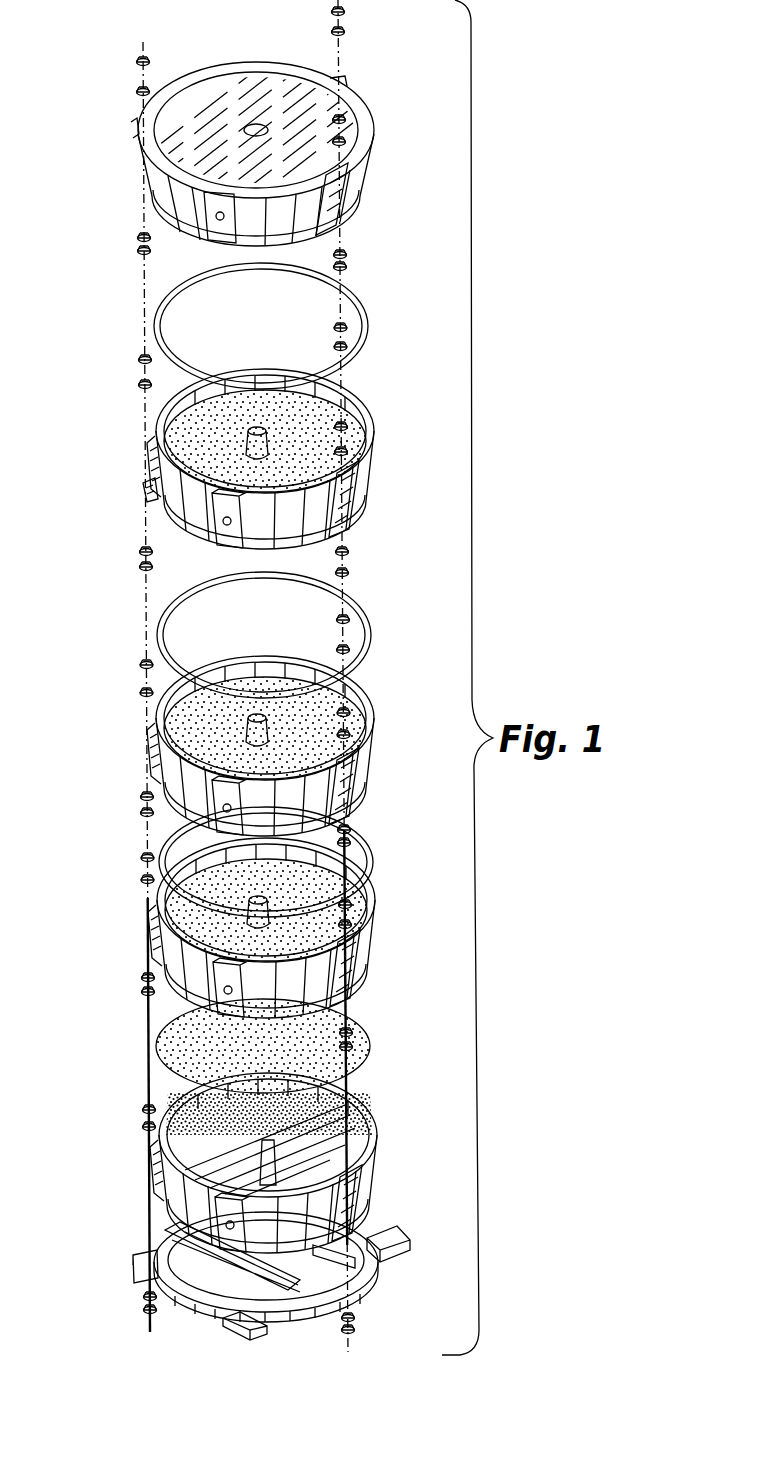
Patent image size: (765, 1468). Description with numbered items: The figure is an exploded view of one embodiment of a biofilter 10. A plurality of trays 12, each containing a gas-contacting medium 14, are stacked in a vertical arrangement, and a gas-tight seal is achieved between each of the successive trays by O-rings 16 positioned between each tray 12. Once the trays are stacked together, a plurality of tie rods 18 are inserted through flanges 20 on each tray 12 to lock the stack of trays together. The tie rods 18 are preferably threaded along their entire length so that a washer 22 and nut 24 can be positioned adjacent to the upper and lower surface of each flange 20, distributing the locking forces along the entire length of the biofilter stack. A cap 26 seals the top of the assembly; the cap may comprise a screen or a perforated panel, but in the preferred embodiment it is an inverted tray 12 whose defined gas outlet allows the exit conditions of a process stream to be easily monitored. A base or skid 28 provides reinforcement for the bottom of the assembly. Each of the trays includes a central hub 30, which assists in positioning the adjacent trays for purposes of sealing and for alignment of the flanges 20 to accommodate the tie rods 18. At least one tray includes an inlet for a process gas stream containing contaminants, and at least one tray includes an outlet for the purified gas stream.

The biofilter 10 is at (98, 345).
The tray 12 is at (373, 918).
The gas-contacting medium 14 is at (345, 398).
The O-ring 16 is at (367, 320).
The tie rod 18 is at (146, 962).
The flange 20 is at (143, 488).
The washer 22 is at (142, 236).
The nut 24 is at (145, 568).
The cap 26 is at (372, 160).
The base or skid 28 is at (373, 1225).
The central hub 30 is at (252, 715).